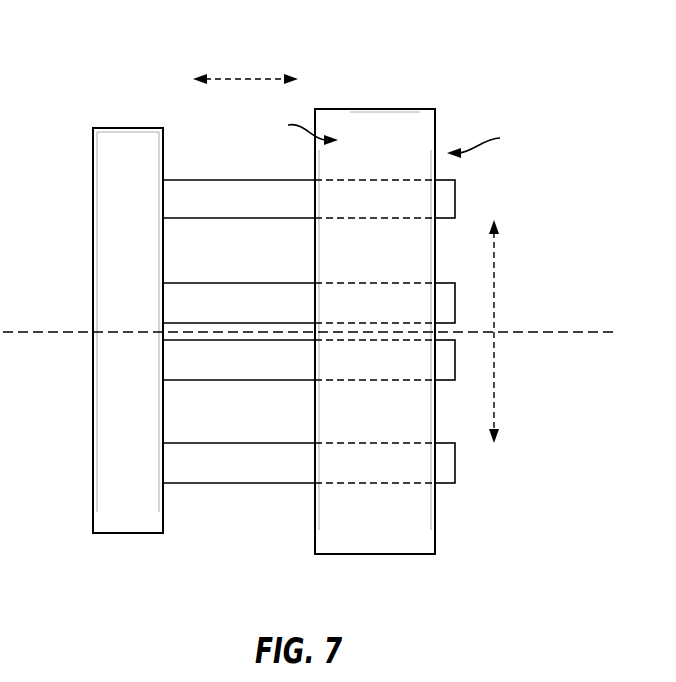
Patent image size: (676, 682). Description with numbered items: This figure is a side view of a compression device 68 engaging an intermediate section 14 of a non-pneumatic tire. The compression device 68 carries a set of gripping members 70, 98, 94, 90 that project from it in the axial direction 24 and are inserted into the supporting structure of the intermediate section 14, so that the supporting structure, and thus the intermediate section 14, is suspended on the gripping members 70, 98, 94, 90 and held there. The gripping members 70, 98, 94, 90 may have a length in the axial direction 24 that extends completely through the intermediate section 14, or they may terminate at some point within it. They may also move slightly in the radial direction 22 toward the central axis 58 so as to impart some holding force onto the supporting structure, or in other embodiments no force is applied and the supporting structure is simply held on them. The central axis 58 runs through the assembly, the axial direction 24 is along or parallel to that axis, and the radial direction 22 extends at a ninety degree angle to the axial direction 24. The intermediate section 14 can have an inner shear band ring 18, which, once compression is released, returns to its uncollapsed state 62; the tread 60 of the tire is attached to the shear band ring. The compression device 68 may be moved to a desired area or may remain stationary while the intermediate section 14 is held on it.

The intermediate section 14 is at (375, 109).
The inner shear band ring 18 is at (340, 555).
The radial direction 22 is at (493, 394).
The axial direction 24 is at (247, 79).
The central axis 58 is at (573, 330).
The tread 60 is at (297, 127).
The uncollapsed state 62 is at (488, 140).
The compression device 68 is at (102, 180).
The gripping member 70 is at (257, 180).
The gripping member 90 is at (257, 483).
The gripping member 94 is at (257, 380).
The gripping member 98 is at (257, 283).